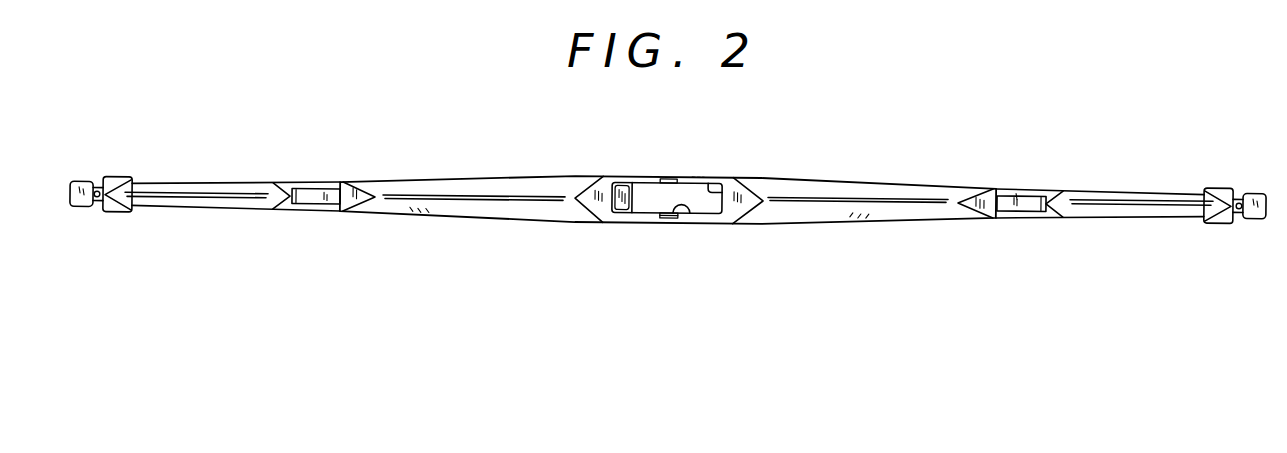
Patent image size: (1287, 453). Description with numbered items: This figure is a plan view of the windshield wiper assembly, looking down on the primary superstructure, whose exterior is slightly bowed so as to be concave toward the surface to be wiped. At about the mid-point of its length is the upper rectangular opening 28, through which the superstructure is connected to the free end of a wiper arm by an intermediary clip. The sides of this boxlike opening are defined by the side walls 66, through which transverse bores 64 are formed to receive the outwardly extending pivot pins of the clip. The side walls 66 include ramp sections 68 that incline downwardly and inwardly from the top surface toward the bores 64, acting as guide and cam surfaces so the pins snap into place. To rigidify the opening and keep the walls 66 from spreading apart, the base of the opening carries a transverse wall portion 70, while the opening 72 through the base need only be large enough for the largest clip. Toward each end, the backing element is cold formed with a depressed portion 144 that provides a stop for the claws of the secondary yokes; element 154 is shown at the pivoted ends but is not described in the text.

The rectangular opening 28 is at (718, 190).
The side walls 66 is at (641, 180).
The transverse wall portion 70 is at (620, 208).
The ramp sections 68 is at (673, 181).
The transverse bores 64 is at (698, 176).
The opening through the base 72 is at (712, 200).
The depressed portion 144 is at (93, 207).
The pivot pin 154 is at (99, 191).